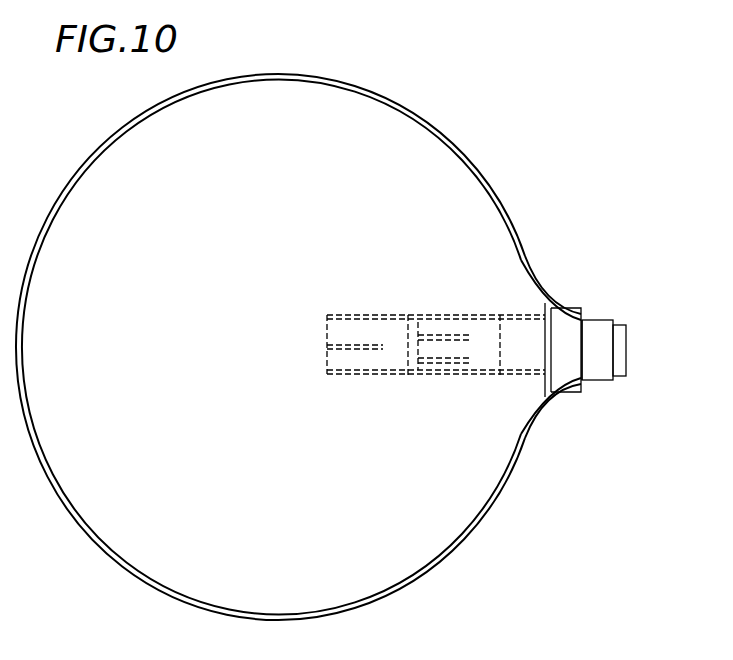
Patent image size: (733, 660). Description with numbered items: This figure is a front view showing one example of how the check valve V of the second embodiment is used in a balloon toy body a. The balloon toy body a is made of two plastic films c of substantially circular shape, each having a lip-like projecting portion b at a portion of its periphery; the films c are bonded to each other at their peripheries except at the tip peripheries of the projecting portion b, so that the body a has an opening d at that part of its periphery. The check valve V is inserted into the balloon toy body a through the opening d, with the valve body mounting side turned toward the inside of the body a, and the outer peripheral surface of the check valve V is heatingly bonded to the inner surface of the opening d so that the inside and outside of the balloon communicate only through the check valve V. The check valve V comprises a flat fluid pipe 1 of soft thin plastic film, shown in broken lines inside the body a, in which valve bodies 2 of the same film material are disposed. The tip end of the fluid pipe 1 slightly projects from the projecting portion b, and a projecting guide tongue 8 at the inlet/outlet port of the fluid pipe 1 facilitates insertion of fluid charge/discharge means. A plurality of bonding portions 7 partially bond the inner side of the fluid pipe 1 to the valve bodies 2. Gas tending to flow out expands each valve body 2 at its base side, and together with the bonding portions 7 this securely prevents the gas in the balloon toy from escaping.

The fluid pipe 1 is at (593, 360).
The valve body 2 is at (408, 348).
The bonding portion 7 is at (352, 343).
The projecting guide tongue 8 is at (618, 349).
The balloon toy body a is at (488, 170).
The lip-like projecting portion b is at (556, 312).
The plastic film c is at (488, 217).
The opening d is at (583, 317).
The check valve V is at (383, 314).